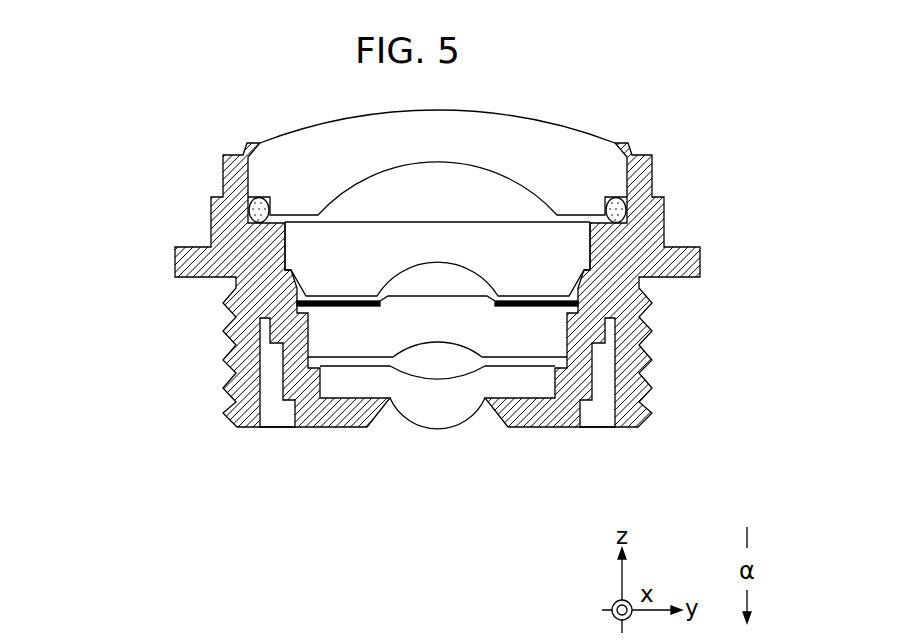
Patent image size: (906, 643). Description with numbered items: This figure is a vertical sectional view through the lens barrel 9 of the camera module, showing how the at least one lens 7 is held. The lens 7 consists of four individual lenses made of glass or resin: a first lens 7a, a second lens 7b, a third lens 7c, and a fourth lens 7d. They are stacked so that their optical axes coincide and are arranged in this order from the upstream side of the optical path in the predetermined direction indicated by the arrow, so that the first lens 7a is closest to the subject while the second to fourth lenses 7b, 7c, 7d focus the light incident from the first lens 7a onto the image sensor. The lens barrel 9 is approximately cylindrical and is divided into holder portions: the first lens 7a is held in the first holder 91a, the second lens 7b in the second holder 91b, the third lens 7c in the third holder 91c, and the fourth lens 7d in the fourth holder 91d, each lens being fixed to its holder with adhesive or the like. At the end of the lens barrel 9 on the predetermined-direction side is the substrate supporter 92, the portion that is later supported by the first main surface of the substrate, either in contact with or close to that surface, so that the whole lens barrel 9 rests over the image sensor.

The lens 7 is at (529, 308).
The first lens 7a is at (577, 128).
The second lens 7b is at (566, 232).
The third lens 7c is at (544, 338).
The fourth lens 7d is at (531, 386).
The lens barrel 9 is at (336, 437).
The first holder 91a is at (236, 185).
The second holder 91b is at (241, 263).
The third holder 91c is at (291, 333).
The fourth holder 91d is at (299, 385).
The substrate supporter 92 is at (246, 428).